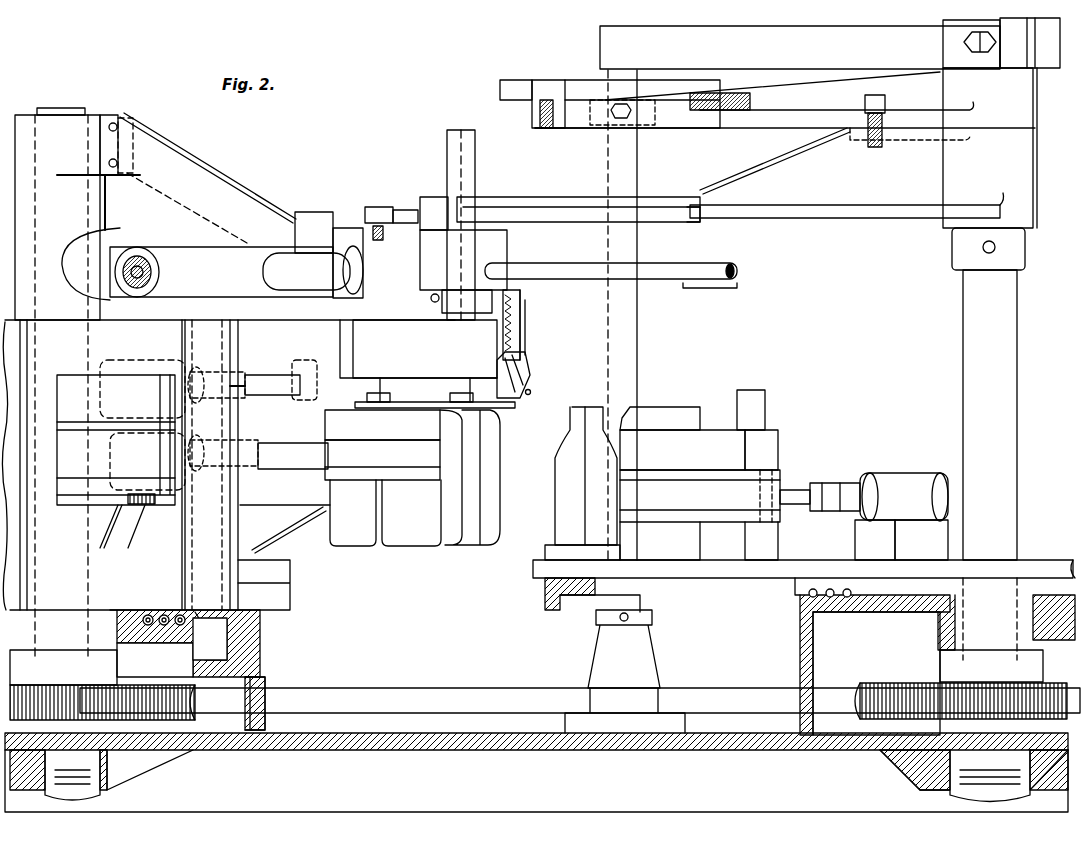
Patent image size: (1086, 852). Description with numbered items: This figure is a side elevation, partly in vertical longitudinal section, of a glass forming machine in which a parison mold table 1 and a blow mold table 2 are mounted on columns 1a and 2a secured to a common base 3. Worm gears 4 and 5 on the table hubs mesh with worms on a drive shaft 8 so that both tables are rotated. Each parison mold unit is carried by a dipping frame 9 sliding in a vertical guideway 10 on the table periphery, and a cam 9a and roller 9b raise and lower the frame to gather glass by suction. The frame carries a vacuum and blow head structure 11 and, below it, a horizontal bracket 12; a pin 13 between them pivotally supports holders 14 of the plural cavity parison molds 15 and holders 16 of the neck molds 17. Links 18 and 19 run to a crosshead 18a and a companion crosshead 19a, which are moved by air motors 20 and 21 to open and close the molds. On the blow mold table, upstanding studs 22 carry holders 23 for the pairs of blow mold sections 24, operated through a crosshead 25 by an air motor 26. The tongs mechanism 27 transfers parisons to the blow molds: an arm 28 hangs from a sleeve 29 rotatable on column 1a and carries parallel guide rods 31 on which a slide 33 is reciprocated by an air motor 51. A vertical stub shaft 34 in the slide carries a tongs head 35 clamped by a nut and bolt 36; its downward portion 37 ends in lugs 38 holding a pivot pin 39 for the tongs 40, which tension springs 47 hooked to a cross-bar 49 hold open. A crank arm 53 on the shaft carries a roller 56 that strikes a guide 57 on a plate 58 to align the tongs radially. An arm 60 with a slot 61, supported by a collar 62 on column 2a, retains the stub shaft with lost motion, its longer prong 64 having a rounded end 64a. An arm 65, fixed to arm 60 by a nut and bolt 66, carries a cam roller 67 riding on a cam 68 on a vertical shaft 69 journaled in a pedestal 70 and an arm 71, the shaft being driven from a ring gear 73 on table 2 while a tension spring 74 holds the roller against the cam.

The parison mold table 1 is at (262, 630).
The column 1a is at (58, 114).
The blow mold table 2 is at (533, 575).
The column 2a is at (968, 332).
The base 3 is at (460, 750).
The worm gear 4 is at (197, 700).
The worm gear 5 is at (858, 700).
The drive shaft 8 is at (455, 700).
The dipping frame 9 is at (266, 575).
The cam 9a is at (266, 655).
The roller 9b is at (285, 614).
The vertical guideway 10 is at (180, 583).
The vacuum and blow head structure 11 is at (296, 332).
The horizontal bracket 12 is at (106, 497).
The pin 13 is at (306, 362).
The holders 14 is at (362, 466).
The plural cavity parison molds 15 is at (380, 538).
The holders 16 is at (372, 378).
The plural cavity neck molds 17 is at (350, 392).
The links 18 is at (250, 445).
The crosshead 18a is at (258, 503).
The links 19 is at (253, 375).
The coupling 19a is at (240, 388).
The air motor 20 is at (150, 505).
The air motor 21 is at (138, 365).
The upstanding studs 22 is at (765, 408).
The holders 23 is at (708, 488).
The sections 24 is at (567, 450).
The crosshead 25 is at (830, 488).
The air motor 26 is at (900, 480).
The tongs mechanism 27 is at (540, 347).
The arm 28 is at (238, 200).
The sleeve 29 is at (100, 118).
The guide rods 31 is at (710, 295).
The slide 33 is at (498, 262).
The vertical stub shaft 34 is at (470, 166).
The tongs head 35 is at (523, 298).
The nut and bolt 36 is at (430, 298).
The vertical downwardly extending portion 37 is at (530, 312).
The lugs 38 is at (527, 371).
The pivot pin 39 is at (532, 391).
The tongs 40 is at (396, 410).
The tension springs 47 is at (502, 330).
The cross-bar 49 is at (520, 296).
The air motor 51 is at (182, 252).
The crank arm 53 is at (428, 237).
The roller 56 is at (366, 206).
The guide 57 is at (346, 226).
The plate 58 is at (297, 212).
The arm 60 is at (822, 205).
The slot 61 is at (692, 217).
The collar 62 is at (958, 252).
The prong 64 is at (635, 200).
The rounded outer end 64a is at (422, 206).
The arm 65 is at (753, 124).
The nut and bolt 66 is at (888, 106).
The cam roller 67 is at (548, 86).
The cam 68 is at (508, 82).
The vertical shaft 69 is at (608, 157).
The pedestal 70 is at (650, 646).
The arm 71 is at (822, 52).
The ring gear 73 is at (548, 596).
The tension spring 74 is at (738, 98).